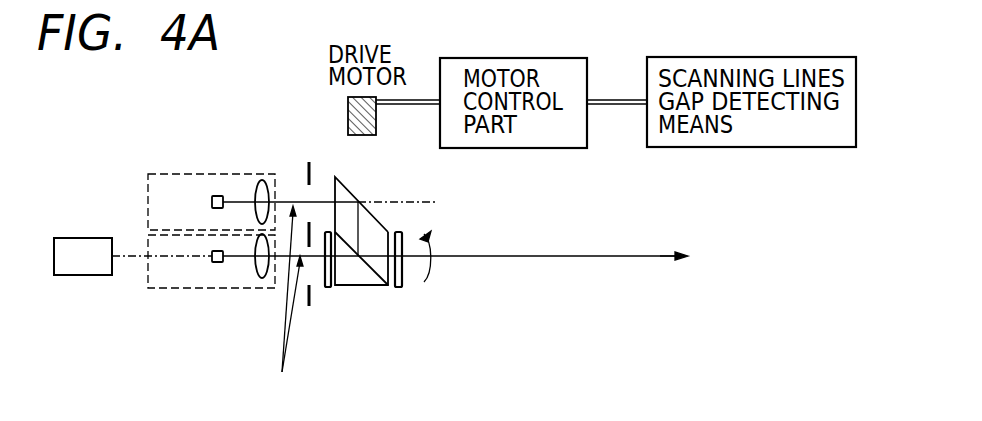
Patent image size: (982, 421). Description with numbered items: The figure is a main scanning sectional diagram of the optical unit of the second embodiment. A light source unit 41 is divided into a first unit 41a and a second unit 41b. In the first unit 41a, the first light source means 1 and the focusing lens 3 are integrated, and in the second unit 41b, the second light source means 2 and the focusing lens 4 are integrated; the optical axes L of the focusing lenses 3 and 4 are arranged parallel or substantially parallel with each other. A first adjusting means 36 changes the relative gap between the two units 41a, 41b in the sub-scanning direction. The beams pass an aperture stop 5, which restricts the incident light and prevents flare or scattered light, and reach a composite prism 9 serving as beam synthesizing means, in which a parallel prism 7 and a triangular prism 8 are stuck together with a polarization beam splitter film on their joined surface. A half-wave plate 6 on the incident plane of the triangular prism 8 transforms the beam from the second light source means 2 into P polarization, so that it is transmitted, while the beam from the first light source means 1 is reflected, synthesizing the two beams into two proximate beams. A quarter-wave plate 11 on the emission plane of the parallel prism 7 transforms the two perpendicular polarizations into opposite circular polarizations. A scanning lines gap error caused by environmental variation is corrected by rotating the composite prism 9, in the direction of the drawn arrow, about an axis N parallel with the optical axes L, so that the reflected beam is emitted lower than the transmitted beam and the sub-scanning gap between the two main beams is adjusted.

The first light source means 1 is at (214, 197).
The second light source means 2 is at (217, 262).
The focusing lens 3 is at (258, 187).
The focusing lens 4 is at (262, 280).
The aperture stop 5 is at (308, 158).
The half-wave plate 6 is at (328, 288).
The parallel prism 7 is at (370, 232).
The triangular prism 8 is at (377, 288).
The composite prism (beam synthesizing means) 9 is at (352, 188).
The quarter-wave plate 11 is at (397, 288).
The first adjusting means 36 is at (82, 276).
The light source unit 41 is at (205, 134).
The first unit 41a is at (157, 173).
The second unit 41b is at (163, 290).
The optical axes L is at (291, 305).
The axis N is at (530, 256).